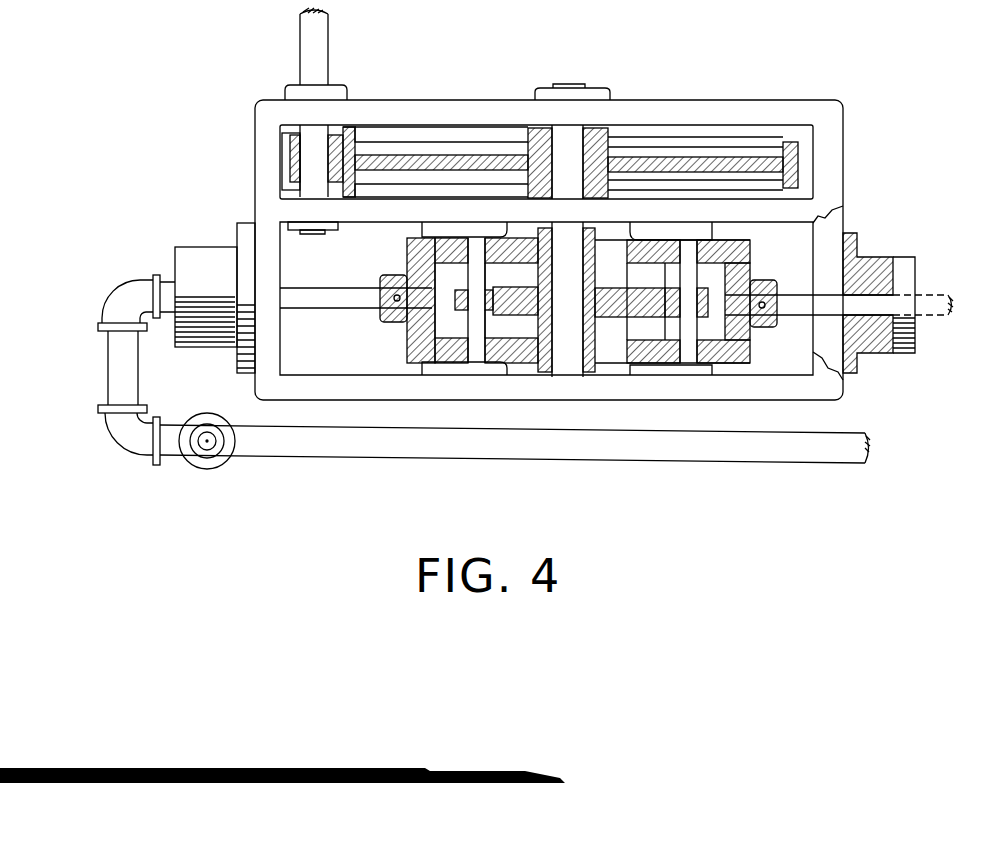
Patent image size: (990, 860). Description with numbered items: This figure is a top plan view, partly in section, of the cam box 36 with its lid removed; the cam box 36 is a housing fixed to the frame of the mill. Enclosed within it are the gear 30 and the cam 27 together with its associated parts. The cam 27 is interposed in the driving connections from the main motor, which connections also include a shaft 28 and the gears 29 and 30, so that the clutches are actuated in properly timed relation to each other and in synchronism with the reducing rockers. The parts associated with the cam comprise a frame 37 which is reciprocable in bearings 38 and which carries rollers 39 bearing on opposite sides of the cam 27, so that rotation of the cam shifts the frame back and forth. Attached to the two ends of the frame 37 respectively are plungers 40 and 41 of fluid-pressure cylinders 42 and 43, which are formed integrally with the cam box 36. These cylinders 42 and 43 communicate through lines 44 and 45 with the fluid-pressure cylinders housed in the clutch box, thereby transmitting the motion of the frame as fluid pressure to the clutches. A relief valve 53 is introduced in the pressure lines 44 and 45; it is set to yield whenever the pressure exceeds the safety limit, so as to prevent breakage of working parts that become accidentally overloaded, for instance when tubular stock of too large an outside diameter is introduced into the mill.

The cam 27 is at (605, 290).
The shaft 28 is at (333, 45).
The gear 29 is at (288, 150).
The gear 30 is at (380, 142).
The cam box 36 is at (817, 104).
The frame 37 is at (405, 338).
The bearings 38 is at (420, 230).
The rollers 39 is at (458, 292).
The plunger 40 is at (305, 292).
The plunger 41 is at (797, 292).
The fluid-pressure cylinder 42 is at (205, 247).
The fluid-pressure cylinder 43 is at (875, 257).
The line 44 is at (107, 367).
The line 45 is at (925, 322).
The relief valve 53 is at (195, 458).